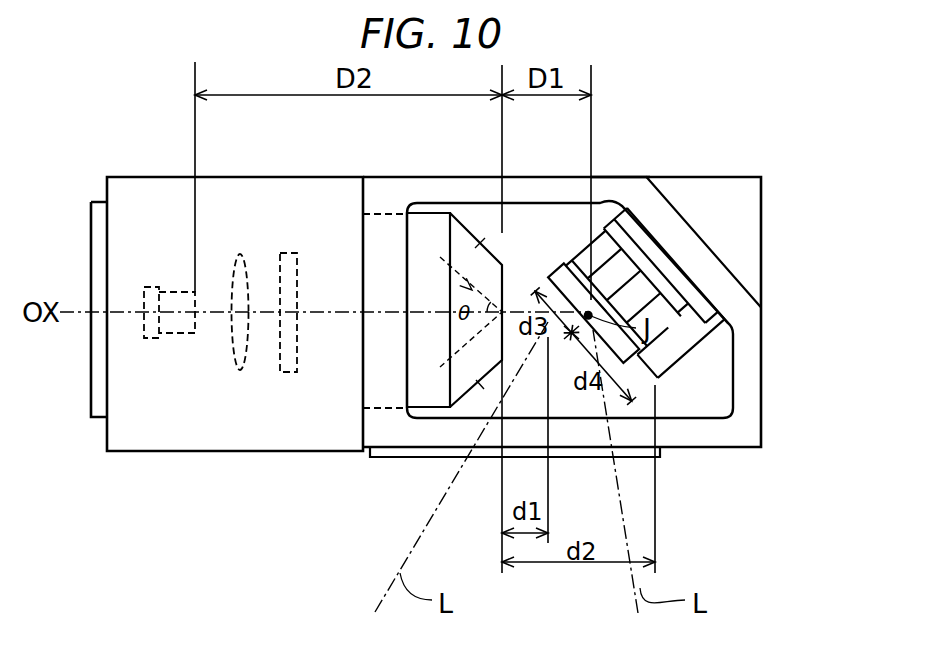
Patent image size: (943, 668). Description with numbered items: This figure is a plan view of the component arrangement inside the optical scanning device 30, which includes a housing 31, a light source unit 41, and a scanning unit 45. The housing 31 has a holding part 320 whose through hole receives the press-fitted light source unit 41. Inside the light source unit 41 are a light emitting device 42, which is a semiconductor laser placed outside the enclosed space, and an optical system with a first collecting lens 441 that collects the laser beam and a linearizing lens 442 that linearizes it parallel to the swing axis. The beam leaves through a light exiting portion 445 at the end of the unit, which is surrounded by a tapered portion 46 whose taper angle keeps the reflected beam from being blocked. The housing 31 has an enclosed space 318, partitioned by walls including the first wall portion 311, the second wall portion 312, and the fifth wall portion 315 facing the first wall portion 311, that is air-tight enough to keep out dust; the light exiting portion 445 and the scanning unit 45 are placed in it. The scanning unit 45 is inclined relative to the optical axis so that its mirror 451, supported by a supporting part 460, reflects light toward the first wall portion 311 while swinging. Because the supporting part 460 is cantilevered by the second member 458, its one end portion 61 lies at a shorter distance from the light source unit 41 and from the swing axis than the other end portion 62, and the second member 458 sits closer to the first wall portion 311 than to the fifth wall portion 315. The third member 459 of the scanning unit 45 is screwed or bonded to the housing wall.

The optical scanning device 30 is at (793, 157).
The housing 31 is at (762, 333).
The first wall portion 311 is at (397, 458).
The second wall portion 312 is at (366, 208).
The fifth wall portion 315 is at (608, 177).
The enclosed space 318 is at (557, 233).
The holding part 320 is at (257, 452).
The light source unit 41 is at (430, 386).
The light emitting device 42 is at (172, 288).
The first collecting lens 441 is at (243, 253).
The linearizing lens 442 is at (294, 253).
The light exiting portion 445 is at (508, 300).
The scanning unit 45 is at (702, 376).
The mirror 451 is at (590, 340).
The second member 458 is at (692, 343).
The third member 459 is at (662, 260).
The supporting part 460 is at (650, 197).
The tapered portion 46 is at (480, 390).
The one end portion 61 is at (562, 266).
The other end portion 62 is at (660, 390).